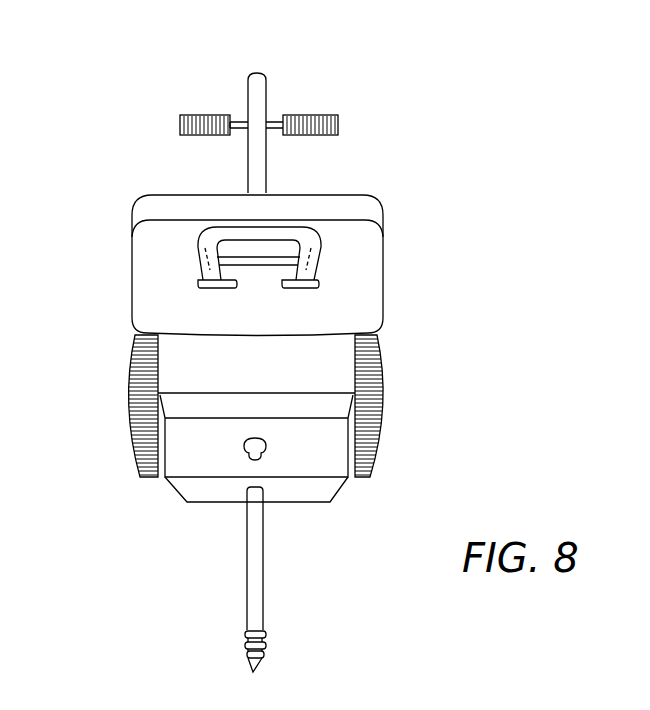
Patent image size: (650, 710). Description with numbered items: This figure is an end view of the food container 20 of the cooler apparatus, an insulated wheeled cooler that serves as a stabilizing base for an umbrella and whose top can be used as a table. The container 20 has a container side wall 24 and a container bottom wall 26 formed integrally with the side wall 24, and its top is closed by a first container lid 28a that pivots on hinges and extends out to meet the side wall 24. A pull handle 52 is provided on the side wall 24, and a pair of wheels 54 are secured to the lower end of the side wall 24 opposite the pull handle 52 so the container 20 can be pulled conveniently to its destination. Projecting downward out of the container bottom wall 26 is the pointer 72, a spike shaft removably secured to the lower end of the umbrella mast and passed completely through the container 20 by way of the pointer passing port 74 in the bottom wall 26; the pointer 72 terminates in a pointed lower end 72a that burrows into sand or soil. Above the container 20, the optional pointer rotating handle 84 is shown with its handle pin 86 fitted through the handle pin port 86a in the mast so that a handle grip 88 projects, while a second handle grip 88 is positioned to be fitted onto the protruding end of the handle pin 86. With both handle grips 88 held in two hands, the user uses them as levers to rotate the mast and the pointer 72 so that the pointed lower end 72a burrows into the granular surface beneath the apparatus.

The food container 20 is at (383, 278).
The container side wall 24 is at (142, 260).
The container bottom wall 26 is at (188, 490).
The first container lid 28a is at (347, 208).
The pull handle 52 is at (320, 255).
The wheels 54 is at (127, 403).
The pointer 72 is at (255, 585).
The pointed lower end 72a is at (252, 672).
The pointer passing port 74 is at (268, 490).
The pointer rotating handle 84 is at (259, 107).
The handle pin 86 is at (245, 121).
The handle pin port 86a is at (245, 142).
The handle grip 88 is at (180, 140).